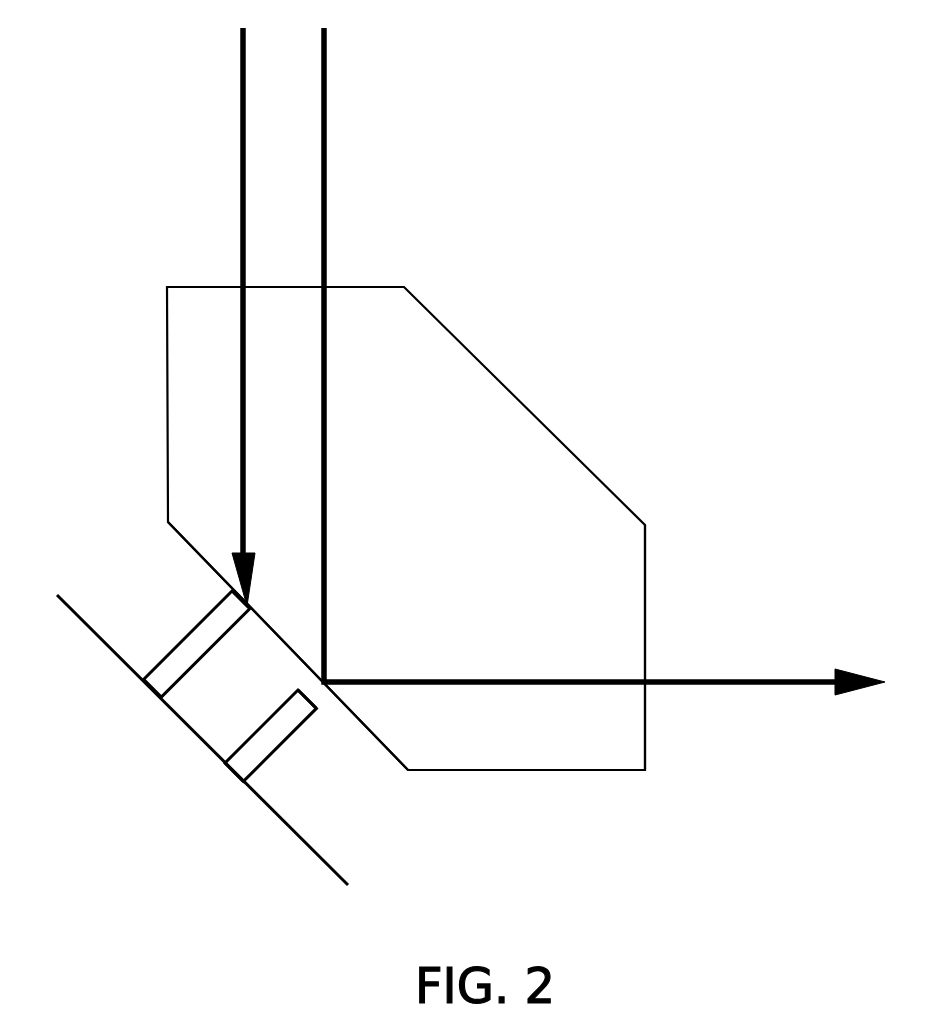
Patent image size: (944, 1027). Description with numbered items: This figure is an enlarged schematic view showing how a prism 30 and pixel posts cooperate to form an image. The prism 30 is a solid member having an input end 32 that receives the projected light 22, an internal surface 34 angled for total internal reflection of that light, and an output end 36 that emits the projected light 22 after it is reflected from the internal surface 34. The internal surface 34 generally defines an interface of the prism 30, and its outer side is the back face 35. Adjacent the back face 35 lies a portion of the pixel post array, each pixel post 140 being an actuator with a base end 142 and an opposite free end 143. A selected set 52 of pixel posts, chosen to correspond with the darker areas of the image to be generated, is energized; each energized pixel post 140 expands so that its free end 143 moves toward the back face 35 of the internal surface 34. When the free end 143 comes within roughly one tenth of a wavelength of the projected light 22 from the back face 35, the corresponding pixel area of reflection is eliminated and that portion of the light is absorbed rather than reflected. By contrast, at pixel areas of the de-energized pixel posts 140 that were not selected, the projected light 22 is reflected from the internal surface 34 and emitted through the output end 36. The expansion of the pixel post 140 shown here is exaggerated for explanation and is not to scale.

The projected light 22 is at (325, 119).
The prism 30 is at (478, 335).
The input end 32 is at (380, 286).
The internal surface 34 is at (393, 752).
The back face 35 is at (197, 550).
The output end 36 is at (645, 565).
The set of pixel posts 52 is at (180, 625).
The pixel post 140 is at (197, 673).
The base end 142 is at (243, 781).
The free end 143 is at (316, 700).